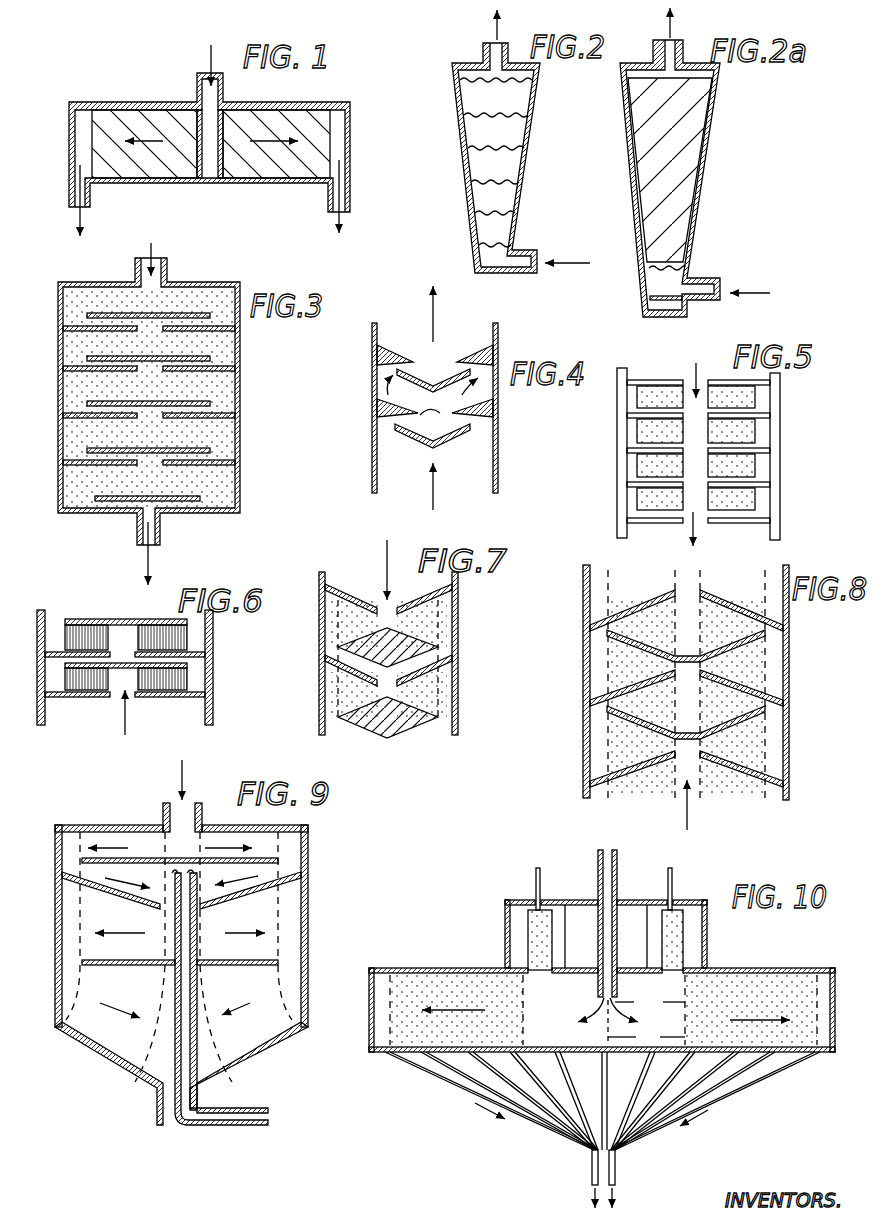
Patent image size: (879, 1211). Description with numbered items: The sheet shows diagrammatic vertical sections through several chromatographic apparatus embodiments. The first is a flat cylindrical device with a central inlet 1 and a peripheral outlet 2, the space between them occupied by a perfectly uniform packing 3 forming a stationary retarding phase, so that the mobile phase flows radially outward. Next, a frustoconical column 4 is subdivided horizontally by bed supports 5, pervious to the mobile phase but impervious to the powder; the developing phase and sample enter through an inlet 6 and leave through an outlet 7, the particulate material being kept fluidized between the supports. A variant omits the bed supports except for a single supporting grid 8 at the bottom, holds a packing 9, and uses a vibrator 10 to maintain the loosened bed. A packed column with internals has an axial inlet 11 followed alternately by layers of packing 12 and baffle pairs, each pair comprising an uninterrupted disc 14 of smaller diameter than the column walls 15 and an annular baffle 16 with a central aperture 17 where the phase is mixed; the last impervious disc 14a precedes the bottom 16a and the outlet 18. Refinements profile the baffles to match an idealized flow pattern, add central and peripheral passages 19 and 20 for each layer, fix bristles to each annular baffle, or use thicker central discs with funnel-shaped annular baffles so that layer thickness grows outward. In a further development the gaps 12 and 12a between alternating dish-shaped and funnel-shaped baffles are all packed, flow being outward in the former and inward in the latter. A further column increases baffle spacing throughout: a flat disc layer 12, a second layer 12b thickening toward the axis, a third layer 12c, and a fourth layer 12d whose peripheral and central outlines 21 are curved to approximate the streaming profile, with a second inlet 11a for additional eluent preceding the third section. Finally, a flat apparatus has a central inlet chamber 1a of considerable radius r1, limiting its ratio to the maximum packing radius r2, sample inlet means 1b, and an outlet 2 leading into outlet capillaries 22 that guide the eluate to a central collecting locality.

In FIG. 1, the central inlet 1 is at (208, 102).
In FIG. 1, the peripheral outlet 2 is at (88, 145).
In FIG. 10, the peripheral outlet 2 is at (830, 1000).
In FIG. 1, the packing 3 is at (283, 122).
In FIG. 2, the frustoconical column 4 is at (470, 180).
In FIG. 2A, the frustoconical column 4 is at (633, 167).
In FIG. 2, the bed supports 5 is at (487, 85).
In FIG. 2, the inlet 6 is at (527, 260).
In FIG. 2A, the inlet 6 is at (710, 281).
In FIG. 2, the outlet 7 is at (487, 58).
In FIG. 2A, the outlet 7 is at (683, 53).
In FIG. 2A, the supporting grid 8 is at (650, 270).
In FIG. 2A, the packing 9 is at (645, 105).
In FIG. 2A, the vibrator 10 is at (660, 310).
In FIG. 3, the inlet 11 is at (166, 272).
In FIG. 9, the inlet 11 is at (200, 816).
In FIG. 9, the second inlet 11a is at (233, 1117).
In FIG. 3, the layer of packing 12 is at (77, 297).
In FIG. 5, the layer of packing 12 is at (660, 427).
In FIG. 7, the layer of packing 12 is at (355, 622).
In FIG. 8, the layer of packing 12 is at (615, 745).
In FIG. 9, the layer of packing 12 is at (100, 843).
In FIG. 8, the packing layer 12a is at (603, 710).
In FIG. 9, the second layer 12b is at (107, 867).
In FIG. 9, the third layer 12c is at (93, 903).
In FIG. 9, the fourth layer 12d is at (110, 980).
In FIG. 3, the disc 14 is at (198, 313).
In FIG. 4, the disc 14 is at (438, 370).
In FIG. 6, the disc 14 is at (117, 660).
In FIG. 7, the disc 14 is at (413, 648).
In FIG. 8, the disc 14 is at (743, 730).
In FIG. 9, the disc 14 is at (258, 857).
In FIG. 3, the last impervious disc 14a is at (200, 498).
In FIG. 3, the column walls 15 is at (58, 370).
In FIG. 4, the column walls 15 is at (498, 388).
In FIG. 5, the column walls 15 is at (622, 408).
In FIG. 3, the annular baffle 16 is at (235, 329).
In FIG. 4, the annular baffle 16 is at (490, 358).
In FIG. 6, the annular baffle 16 is at (200, 656).
In FIG. 7, the annular baffle 16 is at (350, 602).
In FIG. 8, the annular baffle 16 is at (607, 693).
In FIG. 9, the annular baffle 16 is at (293, 880).
In FIG. 3, the bottom 16a is at (207, 514).
In FIG. 9, the bottom 16a is at (268, 1047).
In FIG. 3, the central aperture 17 is at (148, 328).
In FIG. 3, the outlet 18 is at (137, 523).
In FIG. 9, the outlet 18 is at (160, 1108).
In FIG. 5, the central passage 19 is at (695, 460).
In FIG. 8, the central passage 19 is at (687, 635).
In FIG. 5, the peripheral passage 20 is at (763, 468).
In FIG. 8, the peripheral passage 20 is at (772, 663).
In FIG. 9, the peripheral and central outlines 21 is at (150, 1038).
In FIG. 10, the outlet capillaries 22 is at (737, 1067).
In FIG. 10, the central inlet chamber 1a is at (589, 937).
In FIG. 10, the inlet means 1b is at (705, 949).
In FIG. 10, the minimum radius r1 is at (646, 1040).
In FIG. 10, the maximum radius r2 is at (646, 1017).